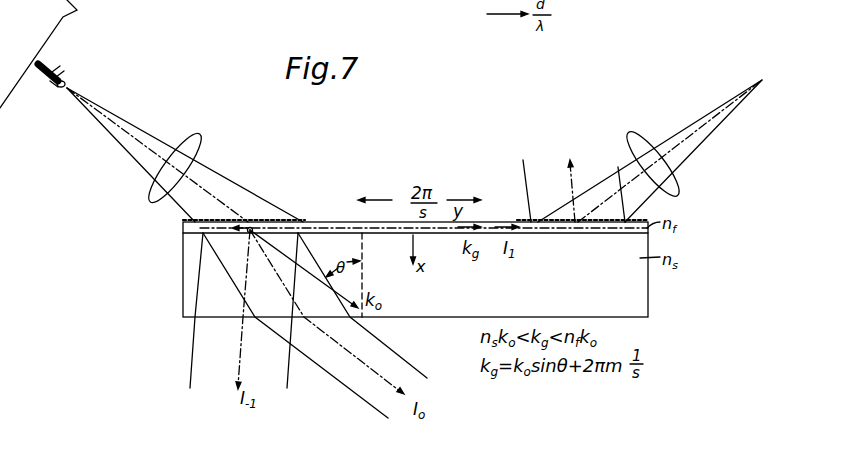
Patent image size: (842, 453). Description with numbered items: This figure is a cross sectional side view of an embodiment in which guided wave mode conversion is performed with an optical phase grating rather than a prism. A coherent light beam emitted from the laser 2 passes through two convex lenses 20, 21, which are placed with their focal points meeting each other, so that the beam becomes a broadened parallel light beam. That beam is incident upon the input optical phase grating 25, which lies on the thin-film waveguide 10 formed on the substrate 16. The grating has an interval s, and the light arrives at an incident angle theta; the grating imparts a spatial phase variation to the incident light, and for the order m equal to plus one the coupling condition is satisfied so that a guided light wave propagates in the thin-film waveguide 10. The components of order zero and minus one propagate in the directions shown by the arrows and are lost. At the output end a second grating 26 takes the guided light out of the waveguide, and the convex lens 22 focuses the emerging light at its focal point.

The laser 2 is at (75, 13).
The convex lens 20 is at (50, 83).
The convex lens 21 is at (187, 143).
The convex lens 22 is at (640, 153).
The input optical phase grating 25 is at (227, 221).
The output grating coupler 26 is at (539, 222).
The thin-film waveguide 10 is at (337, 222).
The substrate 16 is at (377, 234).